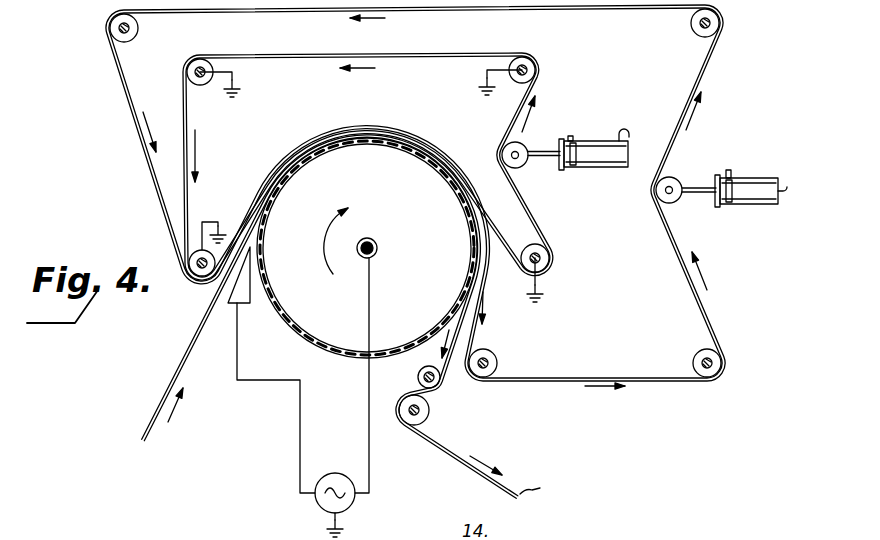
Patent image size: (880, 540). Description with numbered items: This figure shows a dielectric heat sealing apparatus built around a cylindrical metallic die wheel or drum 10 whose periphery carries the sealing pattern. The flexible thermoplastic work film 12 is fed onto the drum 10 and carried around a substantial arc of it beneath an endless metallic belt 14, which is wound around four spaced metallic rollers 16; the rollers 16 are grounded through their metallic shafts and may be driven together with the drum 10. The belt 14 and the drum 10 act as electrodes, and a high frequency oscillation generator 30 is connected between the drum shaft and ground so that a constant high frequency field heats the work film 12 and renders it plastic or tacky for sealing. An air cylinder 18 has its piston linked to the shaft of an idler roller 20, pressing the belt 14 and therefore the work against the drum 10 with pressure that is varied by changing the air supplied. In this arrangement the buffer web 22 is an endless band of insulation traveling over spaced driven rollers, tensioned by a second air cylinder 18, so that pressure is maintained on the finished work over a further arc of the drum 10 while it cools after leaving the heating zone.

The die wheel 10 is at (418, 290).
The work film 12 is at (177, 382).
The endless metallic belt 14 is at (451, 58).
The metallic rollers 16 is at (184, 71).
The air cylinder 18 is at (588, 141).
The idler roller 20 is at (674, 179).
The buffer web 22 is at (598, 12).
The high frequency oscillation generator 30 is at (343, 463).